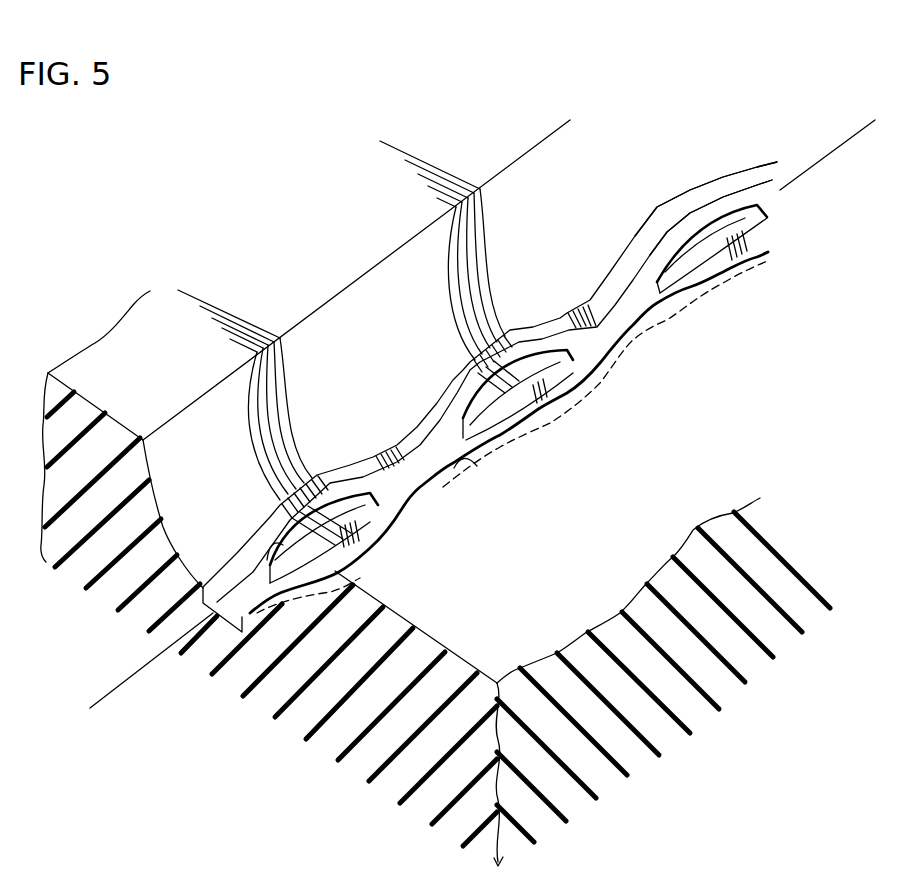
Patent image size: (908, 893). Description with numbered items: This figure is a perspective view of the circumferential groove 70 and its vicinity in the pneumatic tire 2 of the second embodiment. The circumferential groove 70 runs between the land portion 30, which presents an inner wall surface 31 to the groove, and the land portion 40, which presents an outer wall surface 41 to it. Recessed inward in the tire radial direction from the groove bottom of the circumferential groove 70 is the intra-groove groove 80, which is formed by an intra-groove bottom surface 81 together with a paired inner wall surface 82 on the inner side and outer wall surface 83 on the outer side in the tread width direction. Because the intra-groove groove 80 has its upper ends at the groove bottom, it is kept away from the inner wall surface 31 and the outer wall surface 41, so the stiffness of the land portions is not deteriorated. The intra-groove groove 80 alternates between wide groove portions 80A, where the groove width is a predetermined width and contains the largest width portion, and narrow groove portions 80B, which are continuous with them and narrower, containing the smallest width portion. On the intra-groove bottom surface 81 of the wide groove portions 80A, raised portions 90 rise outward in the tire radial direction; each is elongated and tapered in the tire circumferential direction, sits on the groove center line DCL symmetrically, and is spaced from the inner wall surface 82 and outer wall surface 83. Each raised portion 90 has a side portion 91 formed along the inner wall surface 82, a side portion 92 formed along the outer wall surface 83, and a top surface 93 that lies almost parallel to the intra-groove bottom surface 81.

The pneumatic tire 2 is at (330, 118).
The land portion 30 is at (107, 338).
The inner wall surface 31 is at (370, 297).
The land portion 40 is at (650, 585).
The outer wall surface 41 is at (470, 466).
The circumferential groove 70 is at (606, 142).
The intra-groove groove 80 is at (770, 132).
The intra-groove bottom surface 81 is at (713, 208).
The inner wall surface 82 is at (688, 194).
The outer wall surface 83 is at (743, 203).
The wide groove portion 80A is at (540, 408).
The narrow groove portion 80B is at (618, 313).
The raised portion 90 is at (545, 360).
The side portion 91 is at (333, 568).
The side portion 92 is at (337, 548).
The top surface 93 is at (342, 522).
The groove center line DCL is at (818, 175).